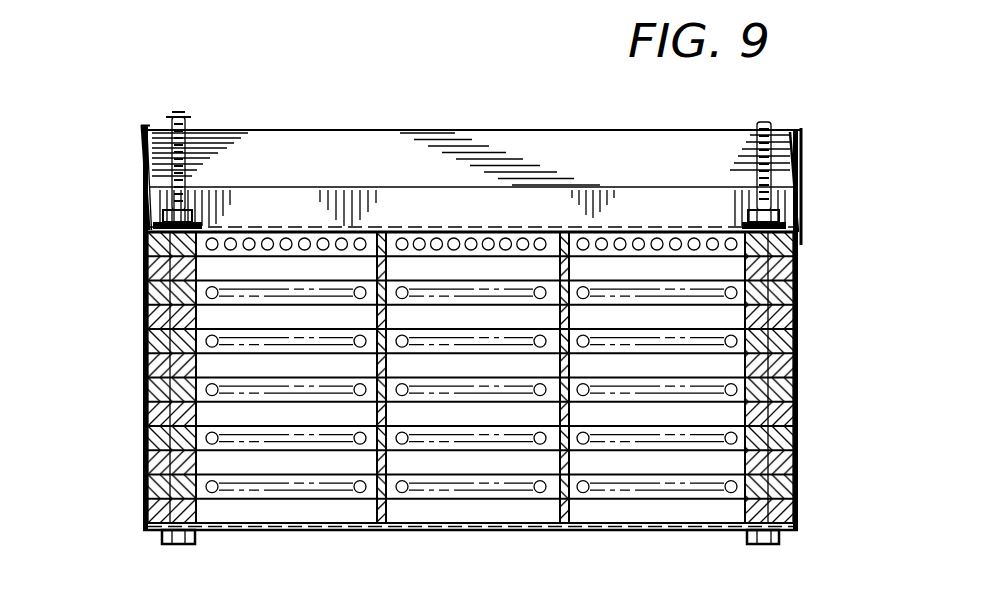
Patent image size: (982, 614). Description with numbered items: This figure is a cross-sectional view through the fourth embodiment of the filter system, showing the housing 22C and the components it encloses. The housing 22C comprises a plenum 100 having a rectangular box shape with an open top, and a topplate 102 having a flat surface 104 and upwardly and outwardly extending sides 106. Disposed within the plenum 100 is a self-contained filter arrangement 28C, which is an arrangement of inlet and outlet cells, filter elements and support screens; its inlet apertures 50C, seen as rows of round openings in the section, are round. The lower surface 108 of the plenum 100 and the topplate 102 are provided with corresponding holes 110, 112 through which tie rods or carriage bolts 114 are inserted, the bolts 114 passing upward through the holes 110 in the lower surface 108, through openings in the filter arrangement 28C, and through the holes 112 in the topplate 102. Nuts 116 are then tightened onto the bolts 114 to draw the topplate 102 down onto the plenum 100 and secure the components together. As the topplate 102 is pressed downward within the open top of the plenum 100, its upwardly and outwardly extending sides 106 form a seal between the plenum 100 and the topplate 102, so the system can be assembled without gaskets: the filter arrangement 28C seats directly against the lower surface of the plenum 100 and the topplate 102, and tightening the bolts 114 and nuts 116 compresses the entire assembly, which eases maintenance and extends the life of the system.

The plenum 100 is at (143, 254).
The topplate 102 is at (158, 125).
The flat surface 104 is at (307, 223).
The upwardly and outwardly extending sides 106 is at (800, 148).
The lower surface 108 is at (338, 530).
The holes 110 is at (158, 533).
The holes 112 is at (143, 228).
The tie rods or carriage bolts 114 is at (188, 121).
The nuts 116 is at (193, 216).
The housing 22C is at (134, 205).
The self-contained filter arrangement 28C is at (800, 237).
The inlet apertures 50C is at (473, 243).